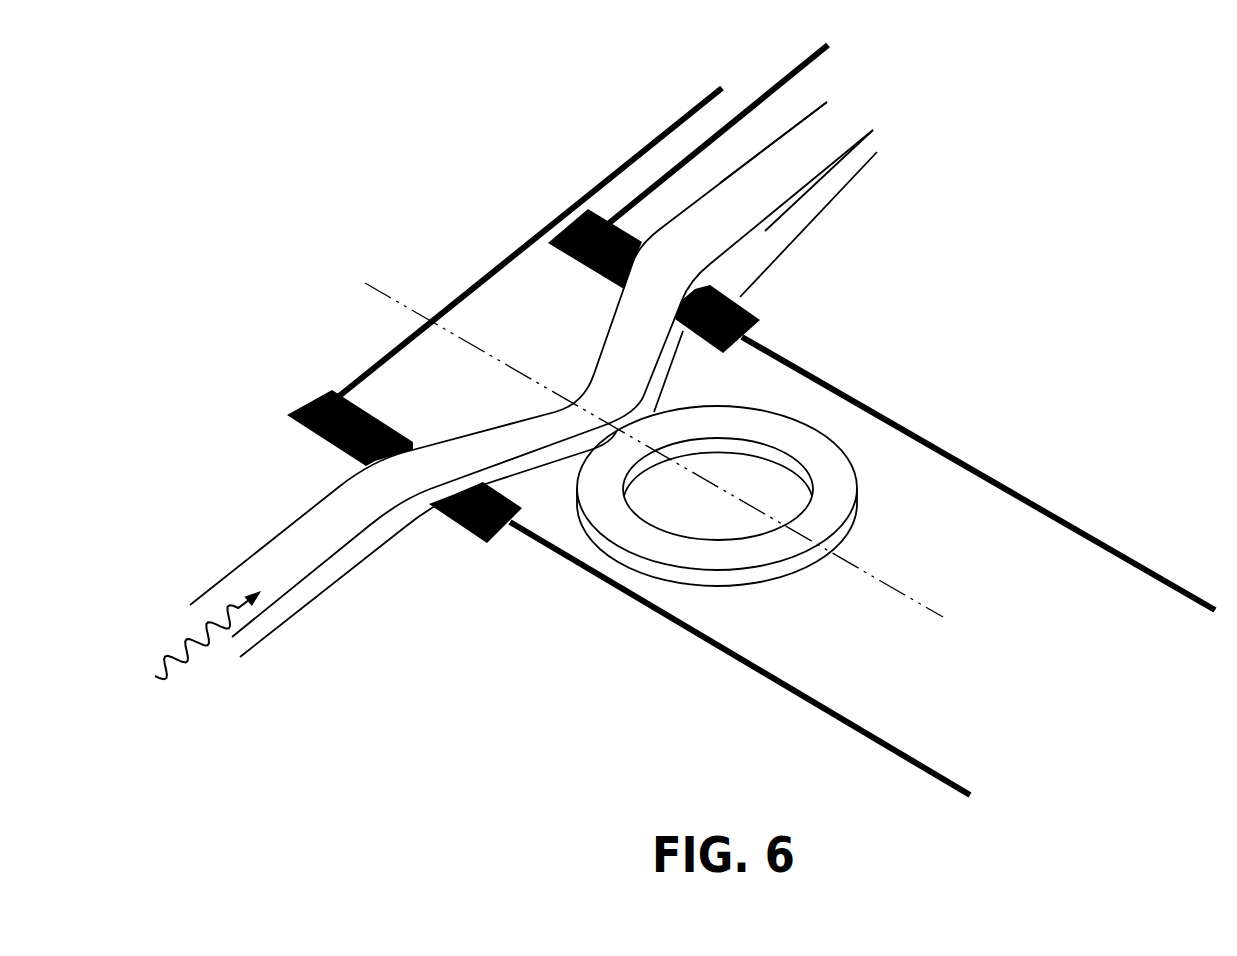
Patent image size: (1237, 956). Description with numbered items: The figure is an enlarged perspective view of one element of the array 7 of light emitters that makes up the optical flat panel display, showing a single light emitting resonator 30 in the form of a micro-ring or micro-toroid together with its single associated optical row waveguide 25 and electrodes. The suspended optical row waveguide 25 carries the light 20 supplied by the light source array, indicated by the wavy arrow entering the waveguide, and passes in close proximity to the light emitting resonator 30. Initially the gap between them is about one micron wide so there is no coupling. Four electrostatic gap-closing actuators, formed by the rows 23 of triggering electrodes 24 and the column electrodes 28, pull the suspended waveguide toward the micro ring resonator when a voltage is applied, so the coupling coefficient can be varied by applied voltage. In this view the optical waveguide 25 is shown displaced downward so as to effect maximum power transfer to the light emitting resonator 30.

The light 20 is at (210, 633).
The rows of triggering electrodes 23 is at (772, 90).
The triggering electrodes 24 is at (307, 401).
The optical row waveguide 25 is at (817, 142).
The column electrodes 28 is at (790, 364).
The light emitting resonator 30 is at (800, 573).
The array of light emitters 7 is at (363, 284).